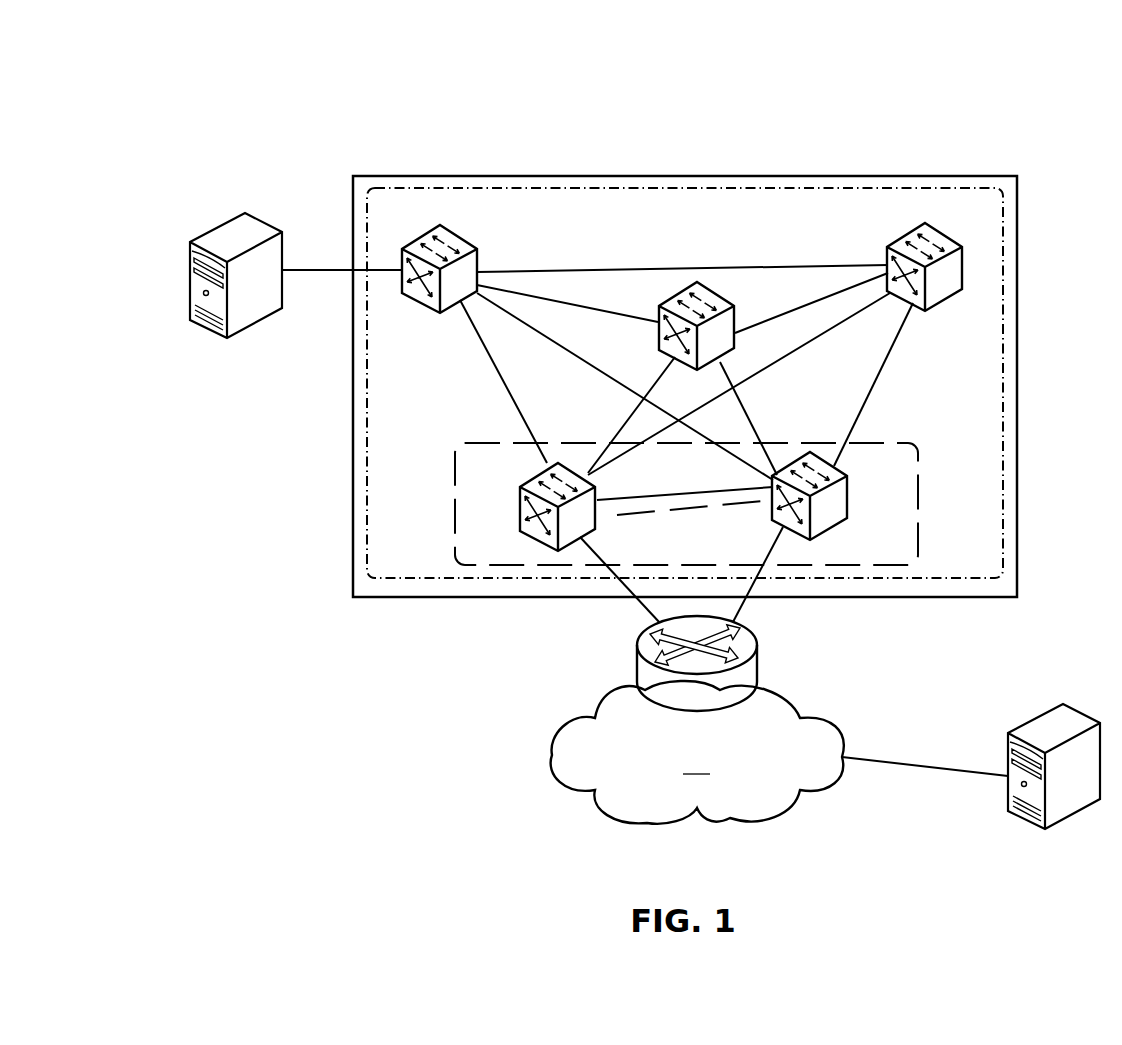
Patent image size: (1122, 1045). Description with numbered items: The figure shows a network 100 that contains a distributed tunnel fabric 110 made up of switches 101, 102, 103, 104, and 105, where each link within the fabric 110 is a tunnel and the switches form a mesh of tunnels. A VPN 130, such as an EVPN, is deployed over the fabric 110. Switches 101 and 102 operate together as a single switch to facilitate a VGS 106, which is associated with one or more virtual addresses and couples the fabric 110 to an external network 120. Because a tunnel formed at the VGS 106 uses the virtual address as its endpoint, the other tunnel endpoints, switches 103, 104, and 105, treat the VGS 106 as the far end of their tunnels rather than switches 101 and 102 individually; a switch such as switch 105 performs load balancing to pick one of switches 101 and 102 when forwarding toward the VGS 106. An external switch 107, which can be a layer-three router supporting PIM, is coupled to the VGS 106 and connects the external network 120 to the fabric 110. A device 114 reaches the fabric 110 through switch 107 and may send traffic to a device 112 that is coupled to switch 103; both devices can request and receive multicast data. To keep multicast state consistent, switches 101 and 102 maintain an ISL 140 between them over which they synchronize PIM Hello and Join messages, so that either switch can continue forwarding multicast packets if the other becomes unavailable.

The network 100 is at (182, 133).
The switch 101 is at (522, 508).
The switch 102 is at (850, 492).
The switch 103 is at (456, 232).
The switch 104 is at (717, 293).
The switch 105 is at (942, 307).
The virtual gateway switch (VGS) 106 is at (897, 565).
The external switch 107 is at (757, 680).
The distributed tunnel fabric 110 is at (893, 177).
The device 112 is at (192, 297).
The device 114 is at (1085, 812).
The external network 120 is at (697, 752).
The VPN 130 is at (1003, 297).
The inter-switch link (ISL) 140 is at (747, 502).